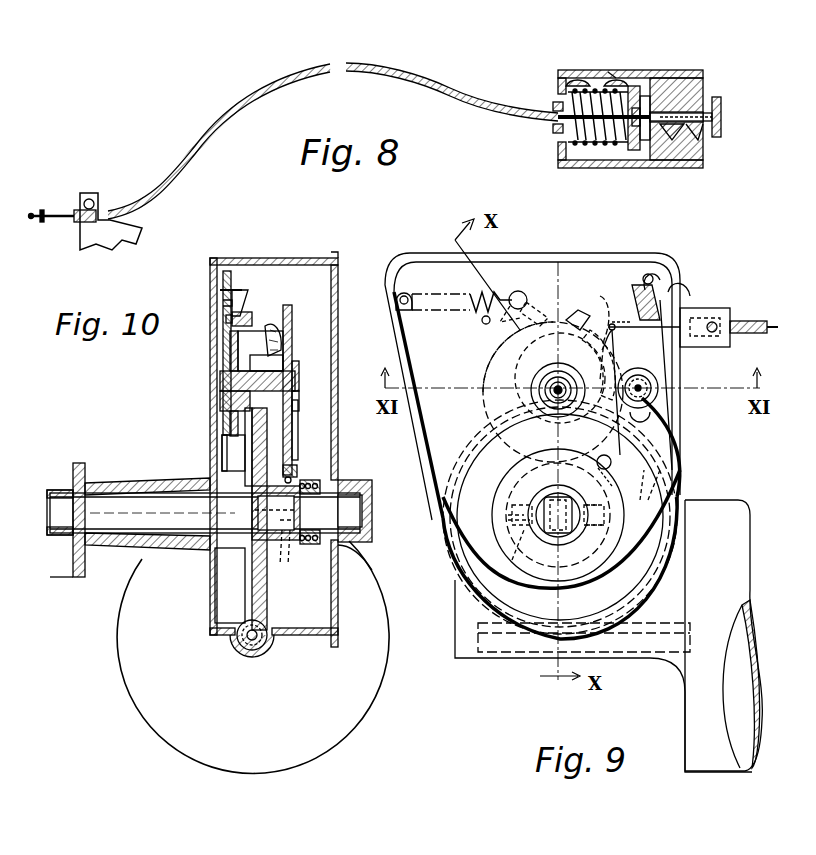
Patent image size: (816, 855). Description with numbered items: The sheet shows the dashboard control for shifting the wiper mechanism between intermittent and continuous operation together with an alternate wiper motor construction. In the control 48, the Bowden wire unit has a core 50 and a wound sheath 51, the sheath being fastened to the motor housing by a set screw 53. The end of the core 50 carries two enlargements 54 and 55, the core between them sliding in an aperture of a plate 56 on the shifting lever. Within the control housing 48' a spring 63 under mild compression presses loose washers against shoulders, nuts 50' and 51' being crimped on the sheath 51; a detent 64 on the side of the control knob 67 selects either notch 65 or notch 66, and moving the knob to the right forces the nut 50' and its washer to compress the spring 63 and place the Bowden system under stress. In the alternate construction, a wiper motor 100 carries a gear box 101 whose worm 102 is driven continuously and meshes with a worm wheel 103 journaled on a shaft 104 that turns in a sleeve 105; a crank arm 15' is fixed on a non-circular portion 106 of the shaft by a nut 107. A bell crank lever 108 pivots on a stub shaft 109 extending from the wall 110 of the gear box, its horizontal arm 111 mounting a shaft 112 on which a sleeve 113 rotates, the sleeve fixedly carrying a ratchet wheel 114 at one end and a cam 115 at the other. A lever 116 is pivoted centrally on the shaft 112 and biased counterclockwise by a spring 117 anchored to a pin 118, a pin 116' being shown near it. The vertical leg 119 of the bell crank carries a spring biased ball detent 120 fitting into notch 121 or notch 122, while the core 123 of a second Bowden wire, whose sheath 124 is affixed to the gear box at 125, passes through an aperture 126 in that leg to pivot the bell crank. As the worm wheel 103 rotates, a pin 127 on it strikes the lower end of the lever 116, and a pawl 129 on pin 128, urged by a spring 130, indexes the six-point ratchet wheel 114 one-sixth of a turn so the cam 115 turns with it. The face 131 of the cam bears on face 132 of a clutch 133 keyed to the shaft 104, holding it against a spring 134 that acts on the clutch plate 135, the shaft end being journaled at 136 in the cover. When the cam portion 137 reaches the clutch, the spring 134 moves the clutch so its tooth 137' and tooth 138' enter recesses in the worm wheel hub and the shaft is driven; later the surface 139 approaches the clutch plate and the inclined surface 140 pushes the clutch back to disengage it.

In FIG. 10, the crank arm 15' is at (55, 584).
In FIG. 8, the control 48 is at (630, 101).
In FIG. 8, the control housing 48' is at (666, 146).
In FIG. 8, the core 50 is at (682, 101).
In FIG. 8, the nut 50' is at (537, 137).
In FIG. 8, the sheath 51 is at (379, 141).
In FIG. 8, the nut 51' is at (692, 86).
In FIG. 8, the set screw 53 is at (100, 205).
In FIG. 8, the enlargement 54 is at (56, 216).
In FIG. 8, the enlargement 55 is at (32, 214).
In FIG. 8, the plate 56 is at (42, 210).
In FIG. 8, the spring 63 is at (588, 150).
In FIG. 8, the detent 64 is at (700, 168).
In FIG. 8, the notch 65 is at (678, 168).
In FIG. 8, the notch 66 is at (700, 150).
In FIG. 8, the control knob 67 is at (722, 96).
In FIG. 10, the wiper motor 100 is at (318, 758).
In FIG. 9, the wiper motor 100 is at (720, 774).
In FIG. 10, the gear box 101 is at (338, 440).
In FIG. 9, the gear box 101 is at (672, 458).
In FIG. 10, the worm 102 is at (260, 652).
In FIG. 9, the worm 102 is at (514, 656).
In FIG. 10, the worm wheel 103 is at (240, 576).
In FIG. 9, the worm wheel 103 is at (445, 484).
In FIG. 10, the shaft 104 is at (168, 520).
In FIG. 10, the sleeve 105 is at (156, 482).
In FIG. 10, the non-circular portion 106 is at (70, 530).
In FIG. 9, the non-circular portion 106 is at (550, 538).
In FIG. 10, the nut 107 is at (64, 480).
In FIG. 9, the bell crank lever 108 is at (643, 379).
In FIG. 9, the stub shaft 109 is at (656, 392).
In FIG. 10, the wall 110 is at (220, 390).
In FIG. 9, the wall 110 is at (562, 286).
In FIG. 9, the horizontal arm 111 is at (647, 424).
In FIG. 10, the shaft 112 is at (299, 380).
In FIG. 9, the shaft 112 is at (540, 400).
In FIG. 10, the sleeve 113 is at (266, 370).
In FIG. 10, the ratchet wheel 114 is at (250, 332).
In FIG. 9, the ratchet wheel 114 is at (522, 358).
In FIG. 10, the cam 115 is at (292, 308).
In FIG. 9, the cam 115 is at (598, 300).
In FIG. 10, the lever 116 is at (199, 353).
In FIG. 9, the lever 116 is at (481, 322).
In FIG. 9, the spring pin 116' is at (471, 316).
In FIG. 9, the spring 117 is at (448, 316).
In FIG. 9, the pin 118 is at (396, 310).
In FIG. 9, the vertical leg 119 is at (608, 340).
In FIG. 9, the spring biased ball detent 120 is at (652, 274).
In FIG. 9, the notch 121 is at (642, 286).
In FIG. 9, the notch 122 is at (680, 286).
In FIG. 9, the core 123 is at (680, 324).
In FIG. 9, the sheath 124 is at (750, 328).
In FIG. 9, the sheath attachment 125 is at (716, 324).
In FIG. 9, the aperture 126 is at (624, 340).
In FIG. 10, the pin 127 is at (222, 452).
In FIG. 9, the pin 127 is at (610, 468).
In FIG. 10, the pin 128 is at (252, 312).
In FIG. 9, the pin 128 is at (540, 300).
In FIG. 9, the pawl 129 is at (538, 310).
In FIG. 10, the spring 130 is at (234, 302).
In FIG. 9, the spring 130 is at (526, 286).
In FIG. 10, the face 131 is at (292, 448).
In FIG. 10, the face 132 is at (297, 476).
In FIG. 10, the clutch 133 is at (308, 546).
In FIG. 9, the clutch 133 is at (528, 508).
In FIG. 10, the spring 134 is at (300, 540).
In FIG. 10, the clutch plate 135 is at (302, 546).
In FIG. 9, the clutch plate 135 is at (528, 480).
In FIG. 10, the journal 136 is at (350, 506).
In FIG. 9, the portion of cam 137 is at (561, 518).
In FIG. 10, the tooth 137' is at (282, 557).
In FIG. 9, the tooth 137' is at (499, 499).
In FIG. 9, the tooth 138' is at (620, 538).
In FIG. 9, the surface 139 is at (597, 365).
In FIG. 10, the inclined surface 140 is at (272, 322).
In FIG. 9, the inclined surface 140 is at (600, 300).